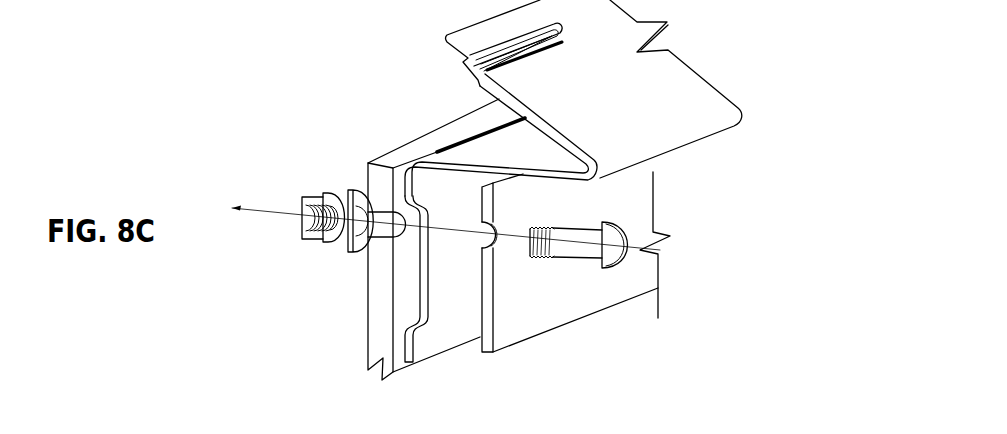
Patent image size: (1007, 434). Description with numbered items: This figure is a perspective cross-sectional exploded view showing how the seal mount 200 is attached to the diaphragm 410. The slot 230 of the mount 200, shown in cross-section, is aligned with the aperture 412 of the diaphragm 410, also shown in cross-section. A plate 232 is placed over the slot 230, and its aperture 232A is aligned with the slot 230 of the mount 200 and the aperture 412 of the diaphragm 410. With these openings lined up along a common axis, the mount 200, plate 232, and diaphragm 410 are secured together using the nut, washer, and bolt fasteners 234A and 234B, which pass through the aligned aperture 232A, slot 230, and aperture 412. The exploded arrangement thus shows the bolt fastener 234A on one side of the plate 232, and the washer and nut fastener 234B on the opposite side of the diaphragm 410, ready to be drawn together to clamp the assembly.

The mount 200 is at (698, 98).
The diaphragm 410 is at (378, 172).
The aperture 412 is at (385, 223).
The fastener 234B is at (313, 198).
The slot 230 is at (423, 280).
The plate 232 is at (522, 303).
The aperture 232A is at (488, 247).
The fastener 234A is at (608, 248).